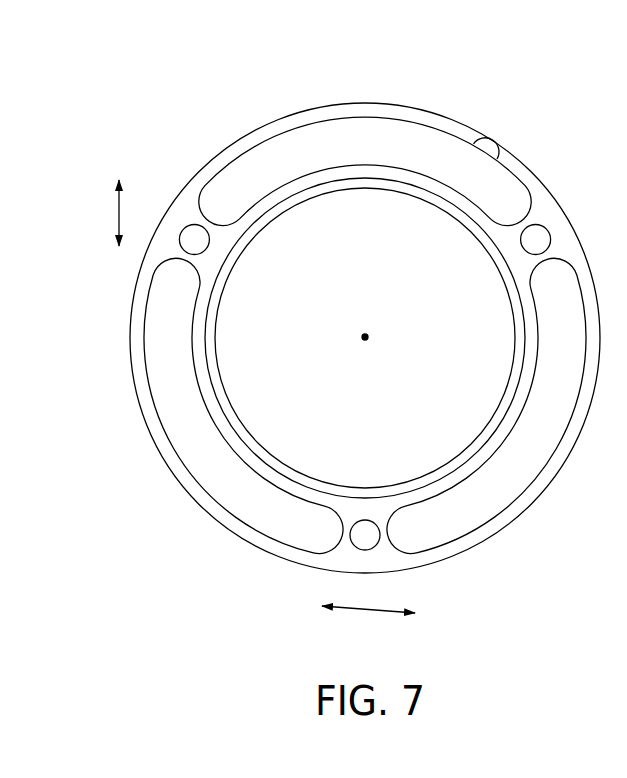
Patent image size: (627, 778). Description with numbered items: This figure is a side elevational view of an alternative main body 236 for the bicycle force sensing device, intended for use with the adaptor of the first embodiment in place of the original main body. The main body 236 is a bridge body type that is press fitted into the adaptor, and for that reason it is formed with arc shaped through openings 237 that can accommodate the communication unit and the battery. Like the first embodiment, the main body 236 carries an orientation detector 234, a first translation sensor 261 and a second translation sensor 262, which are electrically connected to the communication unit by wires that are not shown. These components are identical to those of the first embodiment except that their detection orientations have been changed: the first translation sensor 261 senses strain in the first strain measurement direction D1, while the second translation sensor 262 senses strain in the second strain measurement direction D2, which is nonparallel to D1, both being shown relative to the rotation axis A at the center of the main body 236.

The main body 236 is at (289, 106).
The arc shaped through opening 237 is at (484, 154).
The orientation detector 234 is at (546, 227).
The second translation sensor 262 is at (207, 247).
The first translation sensor 261 is at (360, 520).
The rotation axis A is at (367, 333).
The first strain measurement direction D1 is at (365, 612).
The second strain measurement direction D2 is at (117, 210).